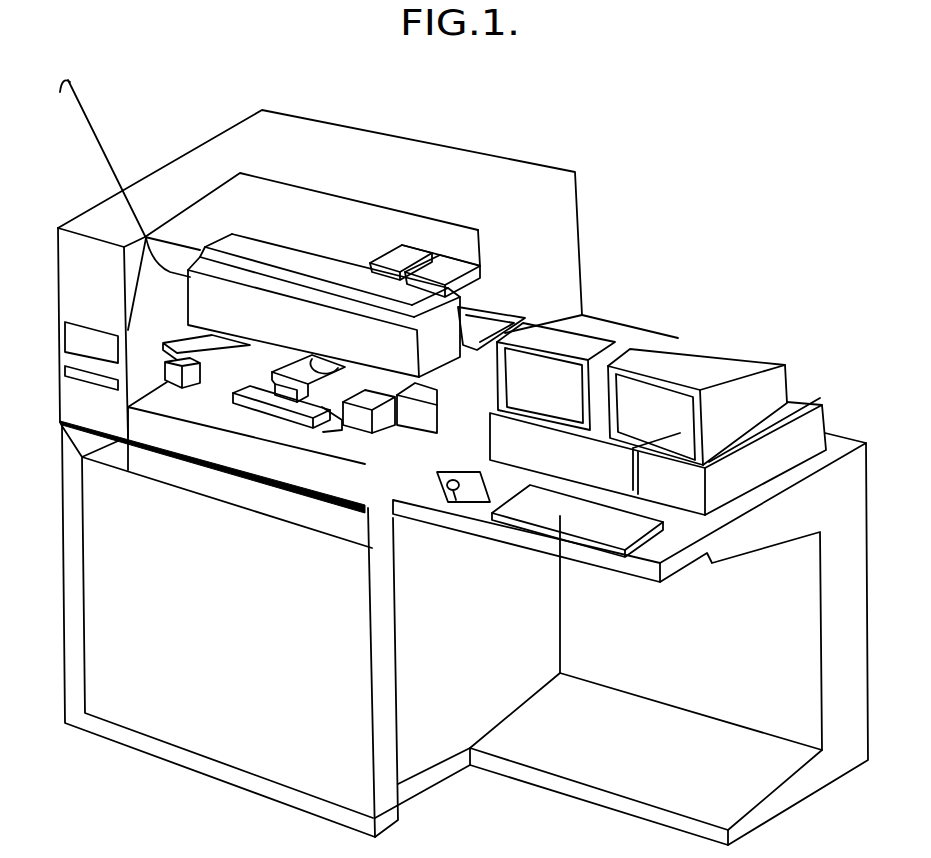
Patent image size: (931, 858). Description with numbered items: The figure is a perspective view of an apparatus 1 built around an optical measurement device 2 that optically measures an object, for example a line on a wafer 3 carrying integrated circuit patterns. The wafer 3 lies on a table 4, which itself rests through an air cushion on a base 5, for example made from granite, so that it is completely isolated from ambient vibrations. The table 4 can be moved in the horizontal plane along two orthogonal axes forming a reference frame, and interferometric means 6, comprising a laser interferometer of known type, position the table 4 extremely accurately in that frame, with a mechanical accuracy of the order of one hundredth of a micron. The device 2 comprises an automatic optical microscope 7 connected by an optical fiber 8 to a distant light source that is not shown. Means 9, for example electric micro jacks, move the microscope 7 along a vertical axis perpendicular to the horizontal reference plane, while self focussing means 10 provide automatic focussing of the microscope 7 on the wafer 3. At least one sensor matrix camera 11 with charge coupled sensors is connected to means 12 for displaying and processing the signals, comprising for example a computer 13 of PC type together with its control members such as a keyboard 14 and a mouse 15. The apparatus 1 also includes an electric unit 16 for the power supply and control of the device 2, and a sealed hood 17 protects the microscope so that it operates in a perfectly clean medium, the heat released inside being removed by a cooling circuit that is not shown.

The apparatus 1 is at (567, 149).
The optical measurement device 2 is at (430, 134).
The wafer 3 is at (315, 363).
The table 4 is at (337, 378).
The base 5 is at (418, 453).
The interferometric means 6 is at (490, 317).
The automatic optical microscope 7 is at (255, 270).
The optical fiber 8 is at (102, 143).
The means for moving the microscope 9 is at (413, 415).
The self focussing means 10 is at (402, 258).
The sensor matrix camera 11 is at (480, 268).
The means for displaying and processing the signals 12 is at (688, 342).
The computer 13 is at (593, 470).
The keyboard 14 is at (538, 510).
The mouse 15 is at (468, 488).
The electric unit 16 is at (112, 673).
The sealed hood 17 is at (352, 222).